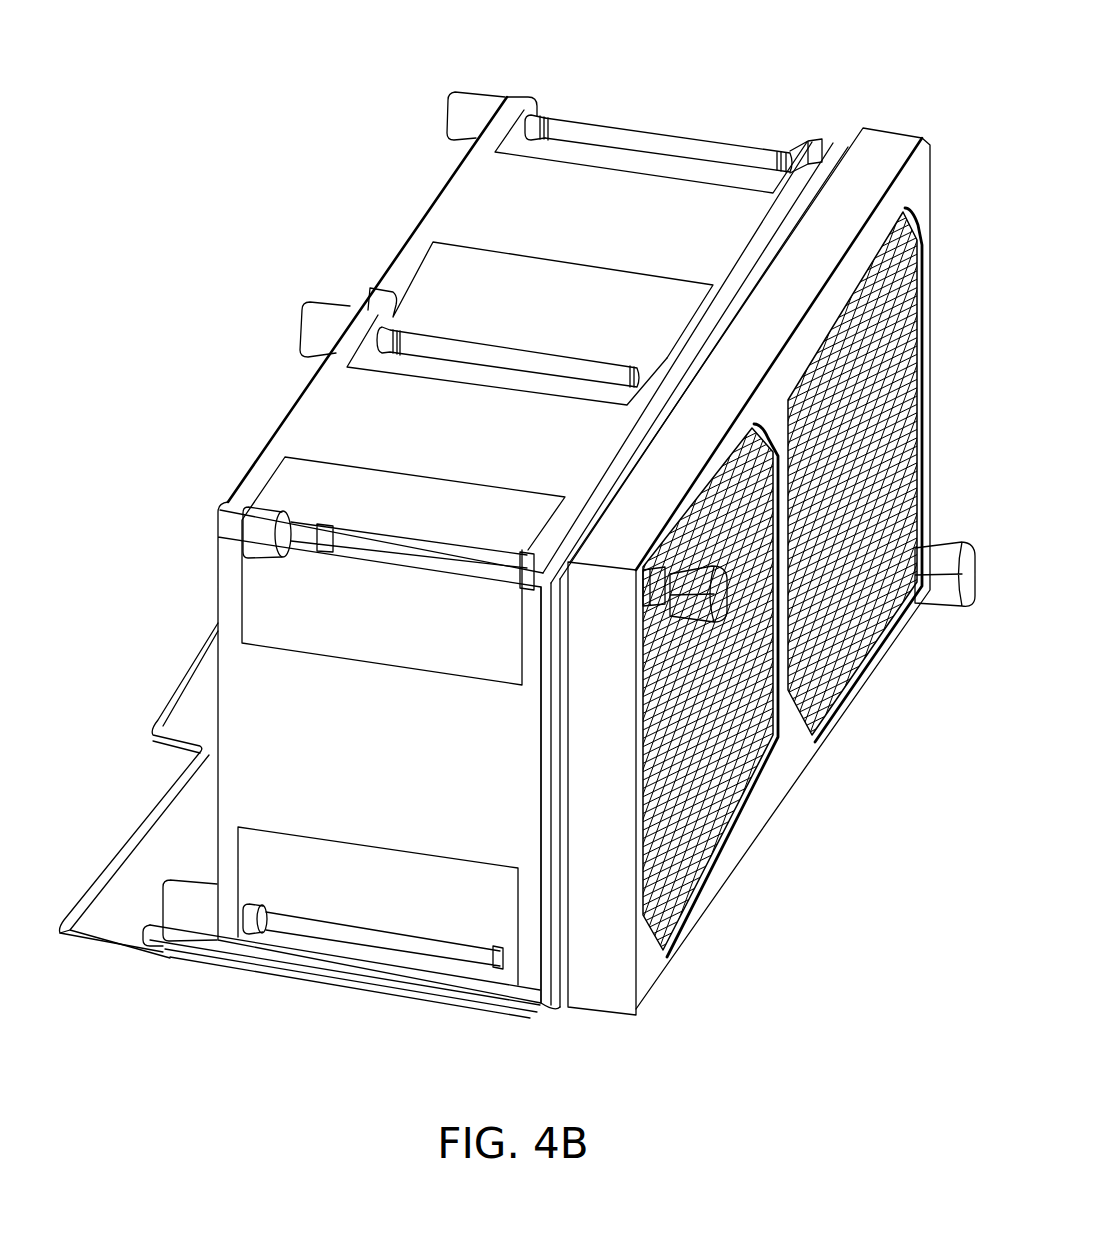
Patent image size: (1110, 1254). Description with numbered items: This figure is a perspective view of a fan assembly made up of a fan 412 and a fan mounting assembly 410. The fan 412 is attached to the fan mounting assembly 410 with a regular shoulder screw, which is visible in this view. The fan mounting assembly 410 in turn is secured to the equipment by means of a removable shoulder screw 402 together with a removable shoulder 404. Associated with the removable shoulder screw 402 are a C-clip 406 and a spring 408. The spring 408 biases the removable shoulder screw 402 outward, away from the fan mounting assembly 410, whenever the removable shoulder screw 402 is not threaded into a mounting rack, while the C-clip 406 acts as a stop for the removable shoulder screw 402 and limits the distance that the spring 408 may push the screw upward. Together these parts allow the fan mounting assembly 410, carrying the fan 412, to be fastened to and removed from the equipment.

The removable shoulder screw 402 is at (700, 565).
The removable shoulder 404 is at (272, 527).
The C-clip 406 is at (535, 568).
The spring 408 is at (625, 570).
The fan mounting assembly 410 is at (652, 986).
The fan 412 is at (817, 143).